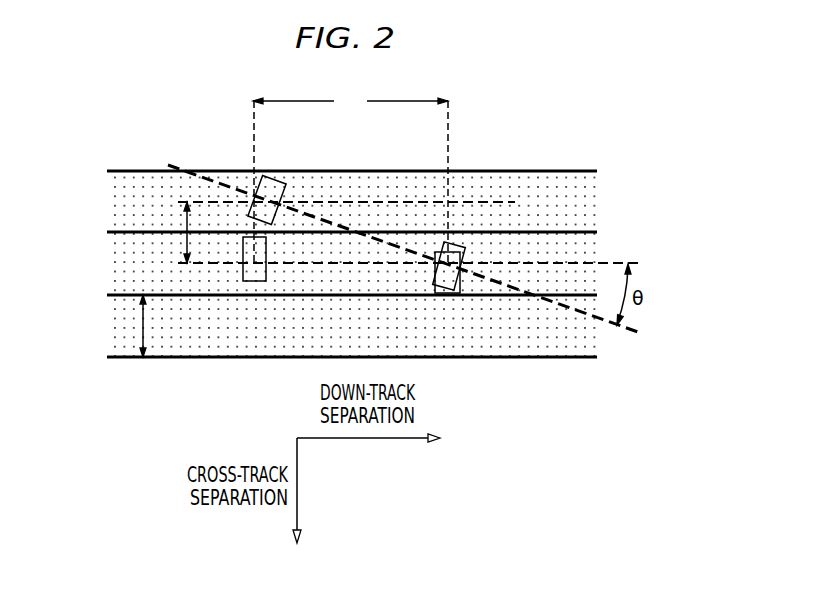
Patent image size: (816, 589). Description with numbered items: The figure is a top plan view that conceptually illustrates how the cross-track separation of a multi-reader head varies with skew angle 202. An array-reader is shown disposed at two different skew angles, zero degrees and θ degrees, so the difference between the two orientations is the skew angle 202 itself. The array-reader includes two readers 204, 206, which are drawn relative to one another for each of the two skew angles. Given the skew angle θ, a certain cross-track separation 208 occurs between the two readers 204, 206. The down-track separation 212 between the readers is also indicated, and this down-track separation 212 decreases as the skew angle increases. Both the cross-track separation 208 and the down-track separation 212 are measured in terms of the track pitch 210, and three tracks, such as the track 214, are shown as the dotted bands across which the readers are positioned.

The skew angle 202 is at (656, 295).
The reader 204 is at (290, 199).
The reader 206 is at (468, 283).
The cross-track separation 208 is at (182, 226).
The track pitch 210 is at (140, 322).
The down-track separation 212 is at (350, 178).
The track 214 is at (210, 328).